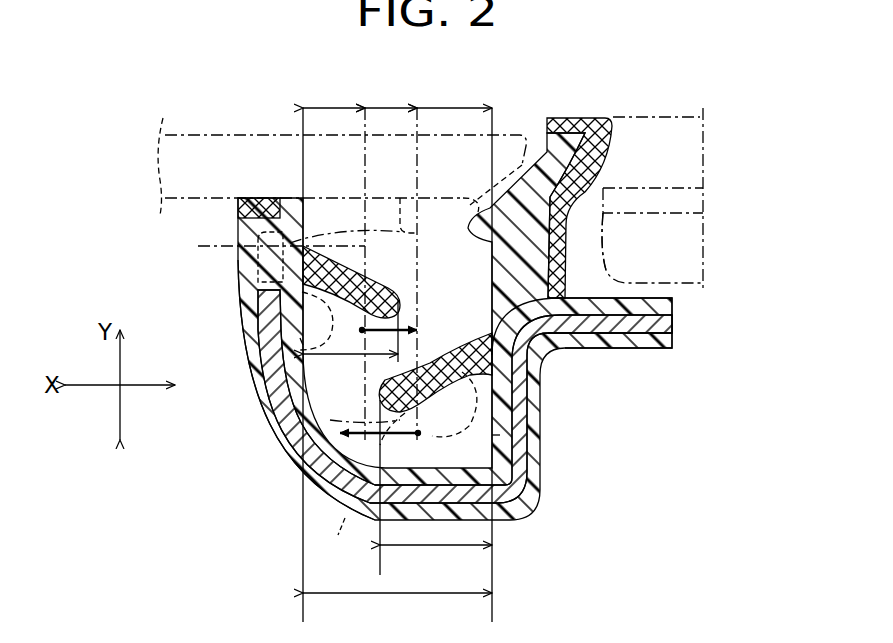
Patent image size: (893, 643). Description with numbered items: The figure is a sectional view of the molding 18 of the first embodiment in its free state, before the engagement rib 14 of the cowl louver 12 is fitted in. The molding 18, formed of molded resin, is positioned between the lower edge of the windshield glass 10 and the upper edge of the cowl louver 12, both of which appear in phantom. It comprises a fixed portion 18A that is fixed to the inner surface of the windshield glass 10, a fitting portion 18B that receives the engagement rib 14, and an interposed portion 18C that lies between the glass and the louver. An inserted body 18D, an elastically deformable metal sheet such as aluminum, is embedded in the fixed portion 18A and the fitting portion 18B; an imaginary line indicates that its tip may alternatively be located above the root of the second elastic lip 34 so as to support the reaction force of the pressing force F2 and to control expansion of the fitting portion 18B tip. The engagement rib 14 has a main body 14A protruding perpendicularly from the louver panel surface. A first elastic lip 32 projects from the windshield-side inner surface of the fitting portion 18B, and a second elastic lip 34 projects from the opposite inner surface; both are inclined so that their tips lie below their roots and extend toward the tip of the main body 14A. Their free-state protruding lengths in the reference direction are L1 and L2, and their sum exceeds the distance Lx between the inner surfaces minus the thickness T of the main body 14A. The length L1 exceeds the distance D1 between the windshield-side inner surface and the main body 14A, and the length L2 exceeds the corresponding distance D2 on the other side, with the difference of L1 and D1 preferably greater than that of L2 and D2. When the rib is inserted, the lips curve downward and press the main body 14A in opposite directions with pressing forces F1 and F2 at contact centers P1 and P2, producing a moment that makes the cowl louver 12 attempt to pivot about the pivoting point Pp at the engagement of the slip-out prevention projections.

The windshield glass 10 is at (662, 110).
The cowl louver 12 is at (225, 130).
The engagement rib 14 is at (300, 250).
The main body 14A is at (337, 539).
The molding 18 is at (461, 317).
The fixed portion 18A is at (646, 345).
The fitting portion 18B is at (268, 427).
The interposed portion 18C is at (565, 160).
The inserted body 18D is at (670, 327).
The first elastic lip 32 is at (505, 372).
The second elastic lip 34 is at (335, 286).
The pivoting point Pp is at (462, 238).
The center of contact region of first elastic lip P1 is at (420, 433).
The center of contact region of second elastic lip P2 is at (300, 345).
The pressing force of first elastic lip F1 is at (300, 460).
The pressing force of second elastic lip F2 is at (404, 302).
The length of first elastic lip L1 is at (436, 488).
The length of second elastic lip L2 is at (350, 342).
The distance between inner surfaces of fitting portion Lx is at (397, 366).
The distance between inner surface and main body D1 is at (454, 94).
The distance between inner surface and main body D2 is at (334, 260).
The thickness of main body T is at (391, 260).